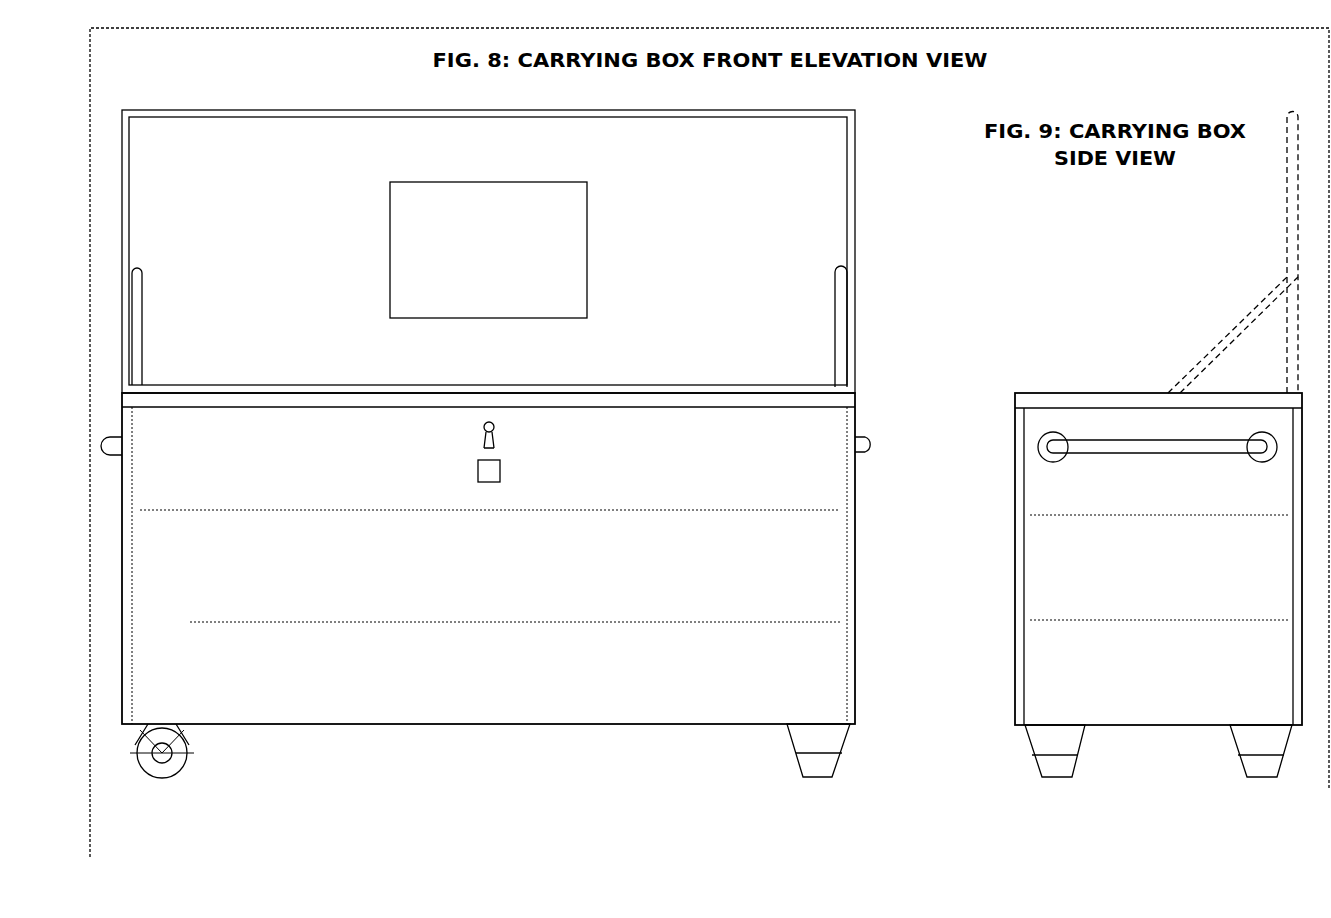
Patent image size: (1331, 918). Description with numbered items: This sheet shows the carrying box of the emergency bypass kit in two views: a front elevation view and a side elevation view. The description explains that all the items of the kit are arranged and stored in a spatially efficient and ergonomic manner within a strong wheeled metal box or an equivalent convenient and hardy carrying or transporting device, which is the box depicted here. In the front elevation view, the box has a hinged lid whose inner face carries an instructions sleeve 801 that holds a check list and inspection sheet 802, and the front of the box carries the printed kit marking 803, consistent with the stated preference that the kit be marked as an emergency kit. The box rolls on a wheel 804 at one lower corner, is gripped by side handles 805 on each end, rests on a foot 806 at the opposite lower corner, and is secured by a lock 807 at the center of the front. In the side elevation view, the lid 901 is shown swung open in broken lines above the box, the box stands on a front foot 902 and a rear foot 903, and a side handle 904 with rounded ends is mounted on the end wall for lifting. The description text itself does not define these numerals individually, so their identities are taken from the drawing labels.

In FIG. 8, the instructions sleeve 801 is at (518, 118).
In FIG. 8, the check list / inspection sheet 802 is at (499, 289).
In FIG. 8, the STP emergency repair kit label 803 is at (488, 563).
In FIG. 8, the wheel 804 is at (184, 751).
In FIG. 8, the side handle 805 is at (873, 447).
In FIG. 8, the foot 806 is at (834, 753).
In FIG. 8, the lock 807 is at (513, 458).
In FIG. 9, the open lid 901 is at (1233, 253).
In FIG. 9, the front foot 902 is at (1074, 751).
In FIG. 9, the rear foot 903 is at (1261, 772).
In FIG. 9, the side handle 904 is at (1157, 447).